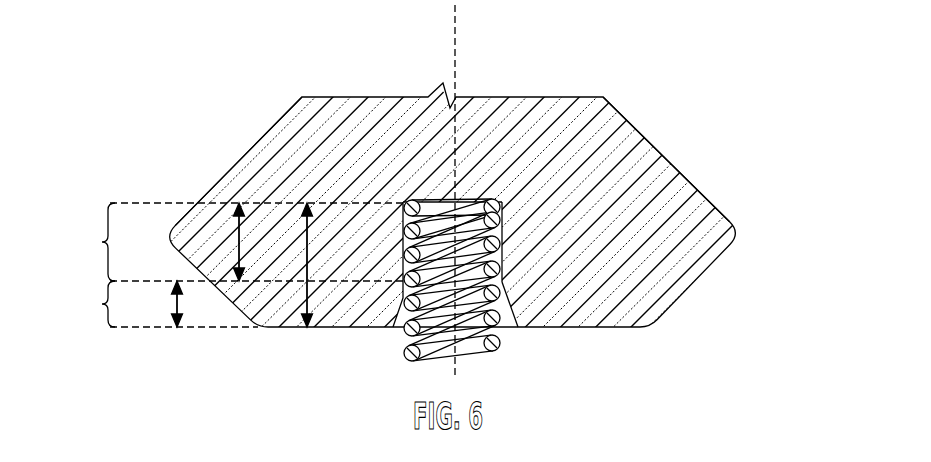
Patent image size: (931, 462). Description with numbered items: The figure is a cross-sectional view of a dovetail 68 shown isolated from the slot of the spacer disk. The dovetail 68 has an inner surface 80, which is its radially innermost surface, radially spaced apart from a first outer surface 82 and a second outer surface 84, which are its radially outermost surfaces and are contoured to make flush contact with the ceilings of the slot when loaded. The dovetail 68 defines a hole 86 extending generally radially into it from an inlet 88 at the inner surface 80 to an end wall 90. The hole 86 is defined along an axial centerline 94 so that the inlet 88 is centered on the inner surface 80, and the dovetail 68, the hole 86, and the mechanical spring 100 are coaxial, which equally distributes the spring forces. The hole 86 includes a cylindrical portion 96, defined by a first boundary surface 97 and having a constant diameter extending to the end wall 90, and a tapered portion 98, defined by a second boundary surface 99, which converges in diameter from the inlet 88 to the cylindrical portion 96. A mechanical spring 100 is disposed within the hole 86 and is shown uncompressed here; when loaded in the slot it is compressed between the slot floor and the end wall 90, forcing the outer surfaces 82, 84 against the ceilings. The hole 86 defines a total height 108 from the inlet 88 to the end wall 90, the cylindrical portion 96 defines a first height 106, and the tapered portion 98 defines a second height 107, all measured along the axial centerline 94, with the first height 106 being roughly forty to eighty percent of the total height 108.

The dovetail 68 is at (666, 79).
The inner surface 80 is at (593, 328).
The first outer surface 82 is at (220, 174).
The second outer surface 84 is at (670, 162).
The hole 86 is at (411, 326).
The inlet 88 is at (491, 304).
The end wall 90 is at (473, 200).
The axial centerline 94 is at (455, 50).
The cylindrical portion 96 is at (236, 242).
The first boundary surface 97 is at (503, 238).
The tapered portion 98 is at (164, 304).
The second boundary surface 99 is at (512, 310).
The mechanical spring 100 is at (405, 357).
The first height 106 is at (241, 245).
The second height 107 is at (176, 305).
The total height 108 is at (308, 252).